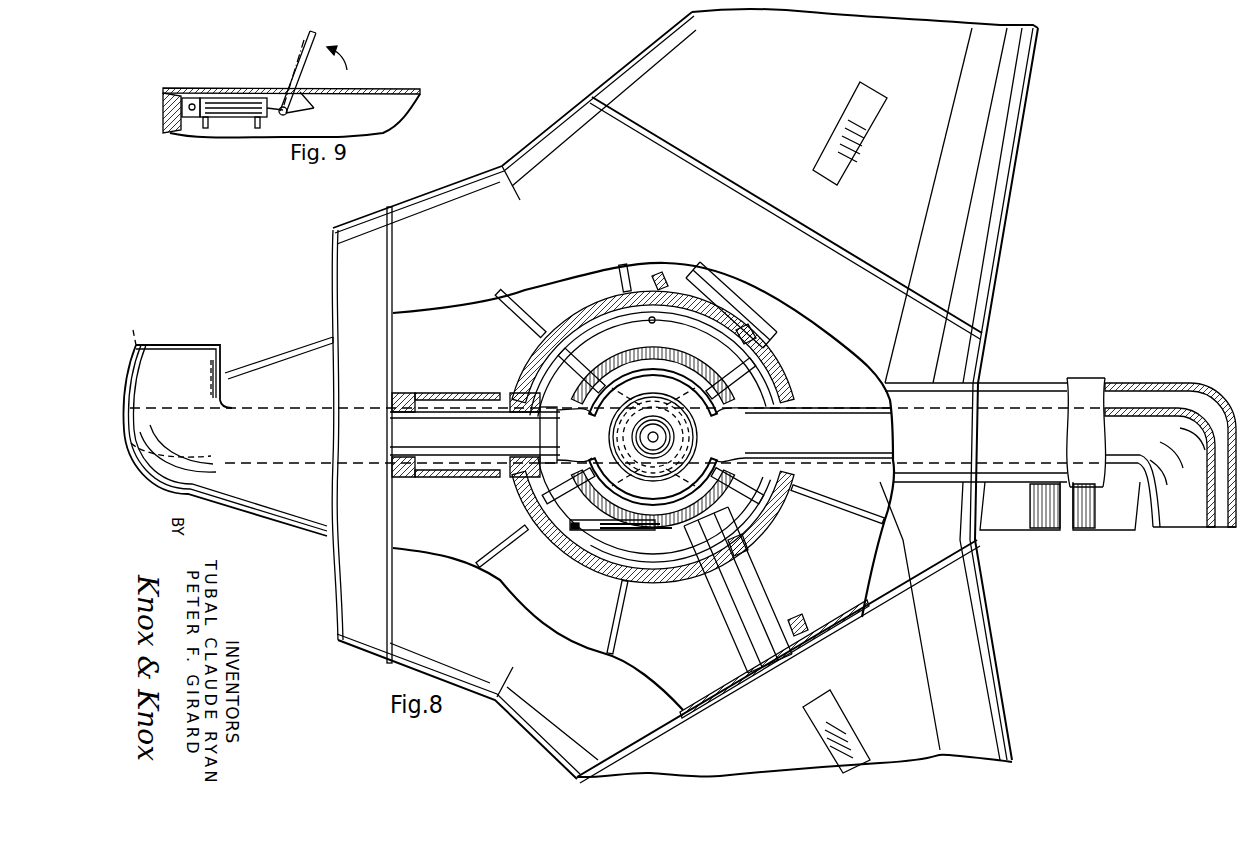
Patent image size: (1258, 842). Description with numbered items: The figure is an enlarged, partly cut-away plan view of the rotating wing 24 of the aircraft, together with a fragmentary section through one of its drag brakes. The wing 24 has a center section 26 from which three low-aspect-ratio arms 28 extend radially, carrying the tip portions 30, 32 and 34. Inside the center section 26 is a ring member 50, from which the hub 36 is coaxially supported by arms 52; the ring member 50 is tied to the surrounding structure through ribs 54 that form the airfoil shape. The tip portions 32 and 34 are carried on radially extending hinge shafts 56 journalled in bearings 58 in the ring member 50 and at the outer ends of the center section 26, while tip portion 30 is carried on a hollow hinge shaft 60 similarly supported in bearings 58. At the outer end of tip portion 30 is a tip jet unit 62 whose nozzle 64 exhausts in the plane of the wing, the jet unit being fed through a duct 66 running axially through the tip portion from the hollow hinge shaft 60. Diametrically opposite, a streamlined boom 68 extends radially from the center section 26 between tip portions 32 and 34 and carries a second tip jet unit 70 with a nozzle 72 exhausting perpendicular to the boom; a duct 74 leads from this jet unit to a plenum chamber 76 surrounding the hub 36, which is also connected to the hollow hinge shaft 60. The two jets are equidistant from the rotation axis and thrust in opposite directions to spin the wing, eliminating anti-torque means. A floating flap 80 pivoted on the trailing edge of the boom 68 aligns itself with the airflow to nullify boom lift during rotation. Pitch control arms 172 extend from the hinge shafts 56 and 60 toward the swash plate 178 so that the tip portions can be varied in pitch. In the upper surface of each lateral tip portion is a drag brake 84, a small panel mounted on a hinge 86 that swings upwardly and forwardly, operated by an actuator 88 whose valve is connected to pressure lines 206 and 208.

In FIG. 8, the wing 24 is at (552, 128).
In FIG. 8, the center section 26 is at (583, 258).
In FIG. 8, the arms 28 is at (400, 207).
In FIG. 8, the tip portion 30 is at (312, 350).
In FIG. 8, the tip portion 32 is at (1003, 203).
In FIG. 8, the tip portion 34 is at (990, 670).
In FIG. 8, the hub 36 is at (675, 437).
In FIG. 8, the ring member 50 is at (775, 360).
In FIG. 8, the arms 52 is at (757, 380).
In FIG. 8, the ribs 54 is at (850, 500).
In FIG. 8, the hinge shafts 56 is at (745, 290).
In FIG. 8, the bearings 58 is at (412, 393).
In FIG. 8, the hollow hinge shaft 60 is at (465, 460).
In FIG. 8, the tip jet unit 62 is at (222, 348).
In FIG. 8, the nozzle 64 is at (226, 420).
In FIG. 8, the duct 66 is at (280, 404).
In FIG. 8, the boom 68 is at (1052, 383).
In FIG. 8, the tip jet unit 70 is at (1222, 390).
In FIG. 8, the nozzle 72 is at (1175, 527).
In FIG. 8, the duct 74 is at (1118, 408).
In FIG. 8, the plenum chamber 76 is at (630, 385).
In FIG. 8, the floating flap 80 is at (1098, 520).
In FIG. 8, the drag brake 84 is at (870, 95).
In FIG. 9, the drag brake 84 is at (303, 37).
In FIG. 9, the hinge 86 is at (292, 88).
In FIG. 9, the actuator 88 is at (253, 110).
In FIG. 8, the pitch control arms 172 is at (633, 342).
In FIG. 8, the swash plate 178 is at (660, 539).
In FIG. 9, the pressure line 206 is at (200, 120).
In FIG. 9, the pressure line 208 is at (262, 122).